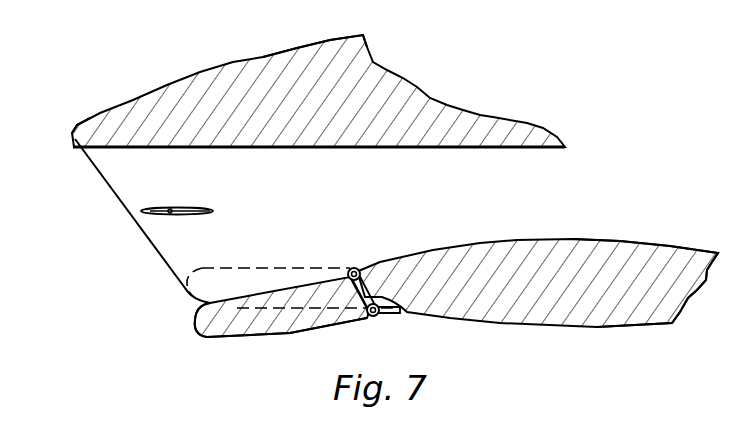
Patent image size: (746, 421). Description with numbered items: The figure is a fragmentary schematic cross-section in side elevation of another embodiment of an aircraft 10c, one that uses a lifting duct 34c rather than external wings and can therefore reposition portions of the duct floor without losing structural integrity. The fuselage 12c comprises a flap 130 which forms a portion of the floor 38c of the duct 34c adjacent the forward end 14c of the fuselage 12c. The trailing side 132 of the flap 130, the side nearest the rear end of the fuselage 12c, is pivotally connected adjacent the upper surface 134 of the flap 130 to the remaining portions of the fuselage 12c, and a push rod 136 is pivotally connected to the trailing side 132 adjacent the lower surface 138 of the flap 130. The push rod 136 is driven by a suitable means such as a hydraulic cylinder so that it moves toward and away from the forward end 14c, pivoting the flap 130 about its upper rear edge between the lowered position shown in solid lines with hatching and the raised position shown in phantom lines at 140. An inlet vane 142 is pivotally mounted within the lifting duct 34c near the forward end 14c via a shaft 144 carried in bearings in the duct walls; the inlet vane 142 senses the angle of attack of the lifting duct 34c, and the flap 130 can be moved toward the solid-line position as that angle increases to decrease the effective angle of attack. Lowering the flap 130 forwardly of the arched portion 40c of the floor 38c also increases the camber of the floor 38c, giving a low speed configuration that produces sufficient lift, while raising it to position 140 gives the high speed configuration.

The aircraft 10c is at (207, 63).
The fuselage 12c is at (313, 61).
The forward end 14c is at (71, 133).
The lifting duct 34c is at (169, 236).
The floor 38c is at (438, 248).
The arched portion 40c is at (578, 240).
The flap 130 is at (198, 333).
The trailing side 132 is at (376, 267).
The upper surface 134 is at (279, 288).
The push rod 136 is at (387, 320).
The lower surface 138 is at (282, 333).
The raised flap position 140 is at (240, 267).
The inlet vane 142 is at (197, 207).
The shaft 144 is at (170, 207).